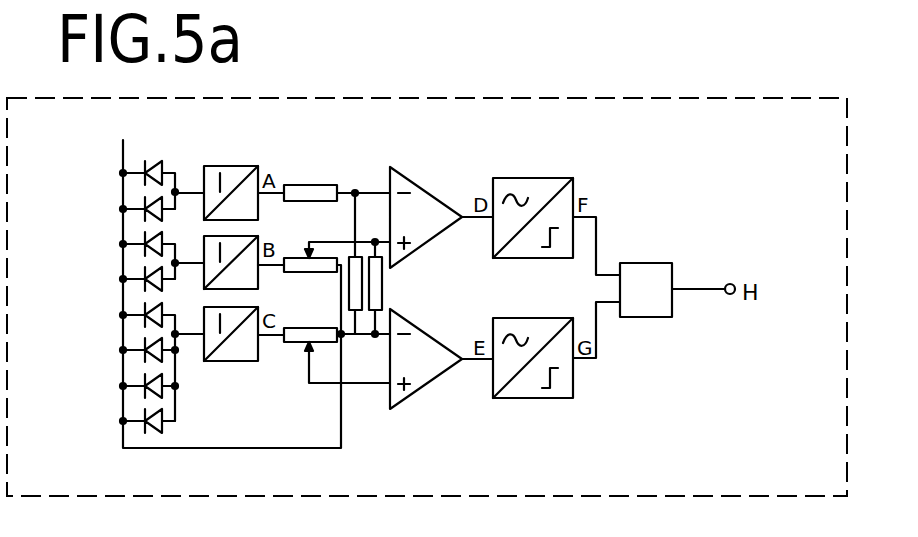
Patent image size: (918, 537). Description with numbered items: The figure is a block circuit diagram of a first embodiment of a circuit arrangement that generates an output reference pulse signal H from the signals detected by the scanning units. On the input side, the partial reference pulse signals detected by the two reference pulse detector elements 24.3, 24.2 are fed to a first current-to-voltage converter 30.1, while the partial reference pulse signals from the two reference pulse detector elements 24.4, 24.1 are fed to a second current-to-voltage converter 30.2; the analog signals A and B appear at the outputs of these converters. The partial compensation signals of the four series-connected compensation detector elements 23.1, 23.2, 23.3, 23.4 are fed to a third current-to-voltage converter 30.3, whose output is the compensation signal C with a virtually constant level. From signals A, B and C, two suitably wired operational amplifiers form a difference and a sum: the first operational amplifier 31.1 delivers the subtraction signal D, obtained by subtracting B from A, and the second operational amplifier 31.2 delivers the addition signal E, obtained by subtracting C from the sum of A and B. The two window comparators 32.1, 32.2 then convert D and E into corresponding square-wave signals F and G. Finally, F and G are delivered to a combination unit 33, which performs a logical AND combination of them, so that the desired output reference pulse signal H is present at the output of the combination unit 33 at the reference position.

The reference pulse detector element 24.3 is at (147, 187).
The reference pulse detector element 24.2 is at (147, 220).
The reference pulse detector element 24.4 is at (147, 256).
The reference pulse detector element 24.1 is at (147, 292).
The compensation detector element 23.3 is at (147, 329).
The compensation detector element 23.4 is at (147, 362).
The compensation detector element 23.2 is at (147, 397).
The compensation detector element 23.1 is at (147, 432).
The first current-to-voltage converter 30.1 is at (243, 172).
The second current-to-voltage converter 30.2 is at (229, 286).
The third current-to-voltage converter 30.3 is at (228, 362).
The first operational amplifier 31.1 is at (437, 214).
The second operational amplifier 31.2 is at (432, 357).
The window comparator 32.1 is at (548, 190).
The window comparator 32.2 is at (545, 333).
The combination unit 33 is at (628, 274).